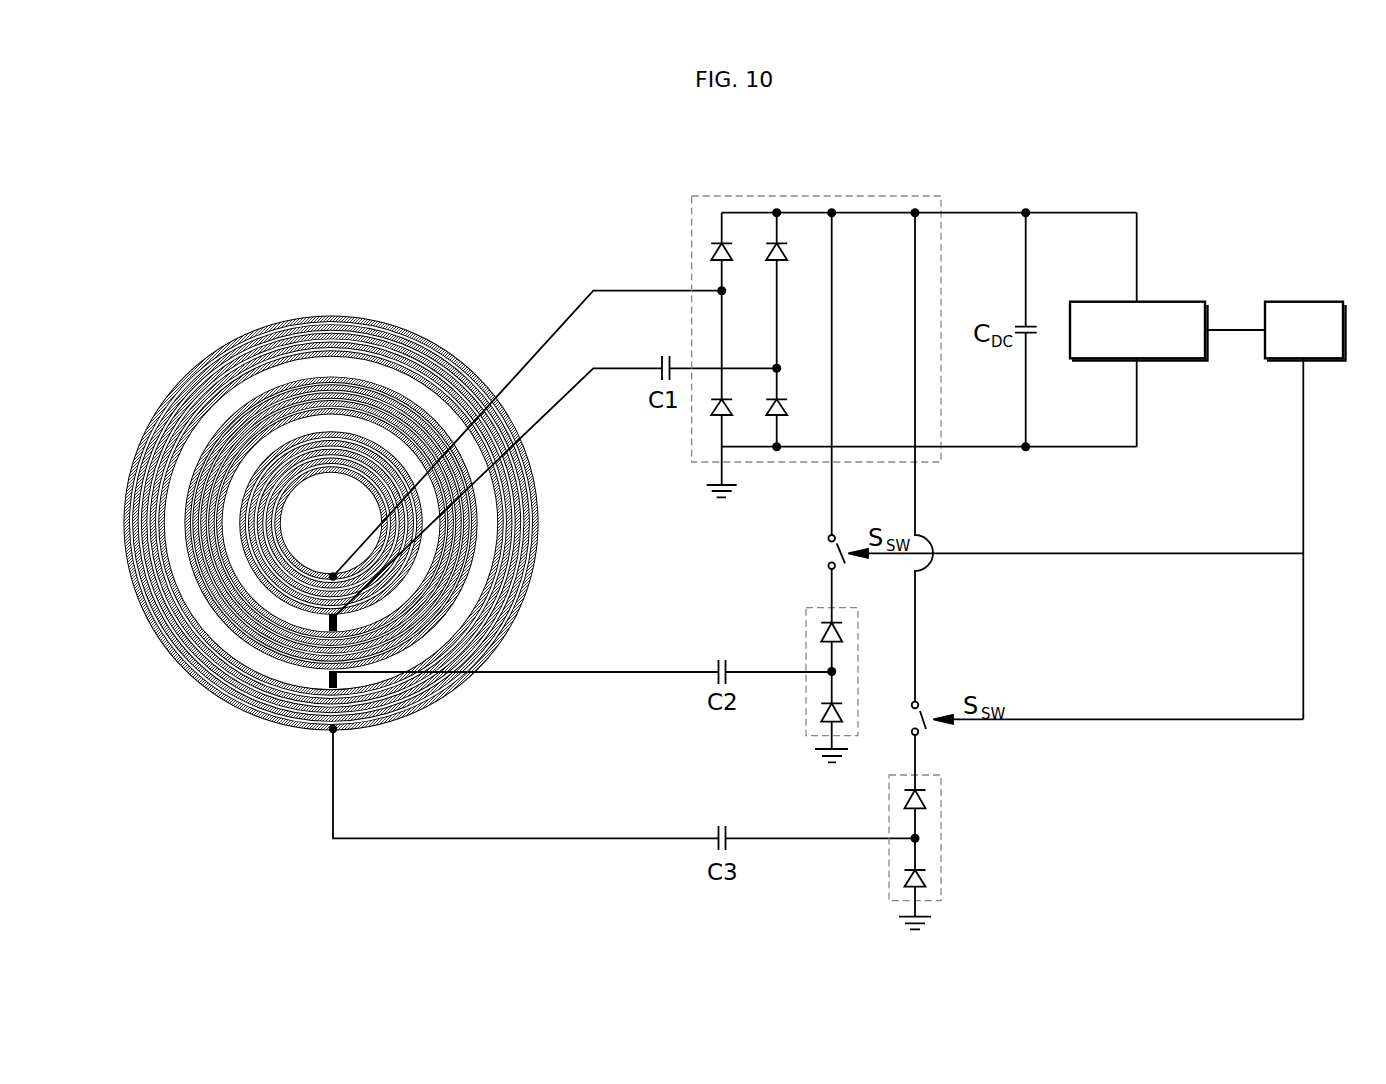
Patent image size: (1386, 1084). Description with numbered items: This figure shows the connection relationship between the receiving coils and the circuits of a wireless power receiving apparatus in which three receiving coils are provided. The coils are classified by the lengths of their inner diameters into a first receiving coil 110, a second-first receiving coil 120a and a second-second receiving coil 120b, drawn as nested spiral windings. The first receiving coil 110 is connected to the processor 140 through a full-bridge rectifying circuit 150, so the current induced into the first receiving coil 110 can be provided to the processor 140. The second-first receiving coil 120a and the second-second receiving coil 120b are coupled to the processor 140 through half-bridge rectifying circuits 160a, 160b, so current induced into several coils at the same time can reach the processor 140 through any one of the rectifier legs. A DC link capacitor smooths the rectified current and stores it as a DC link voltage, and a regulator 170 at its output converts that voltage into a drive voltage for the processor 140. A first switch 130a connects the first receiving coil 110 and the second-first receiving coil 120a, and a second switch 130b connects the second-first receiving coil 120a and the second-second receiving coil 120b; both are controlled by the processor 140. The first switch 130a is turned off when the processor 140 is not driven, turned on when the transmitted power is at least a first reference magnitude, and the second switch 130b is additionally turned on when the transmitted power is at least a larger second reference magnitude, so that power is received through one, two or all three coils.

The first receiving coil 110 is at (353, 434).
The 2-1 receiving coil 120a is at (250, 403).
The 2-2 receiving coil 120b is at (288, 322).
The full-bridge rectifying circuit 150 is at (843, 196).
The regulator 170 is at (1177, 301).
The processor 140 is at (1325, 343).
The first switch 130a is at (841, 548).
The second switch 130b is at (922, 714).
The half-bridge rectifying circuit 160a is at (809, 607).
The half-bridge rectifying circuit 160b is at (941, 838).